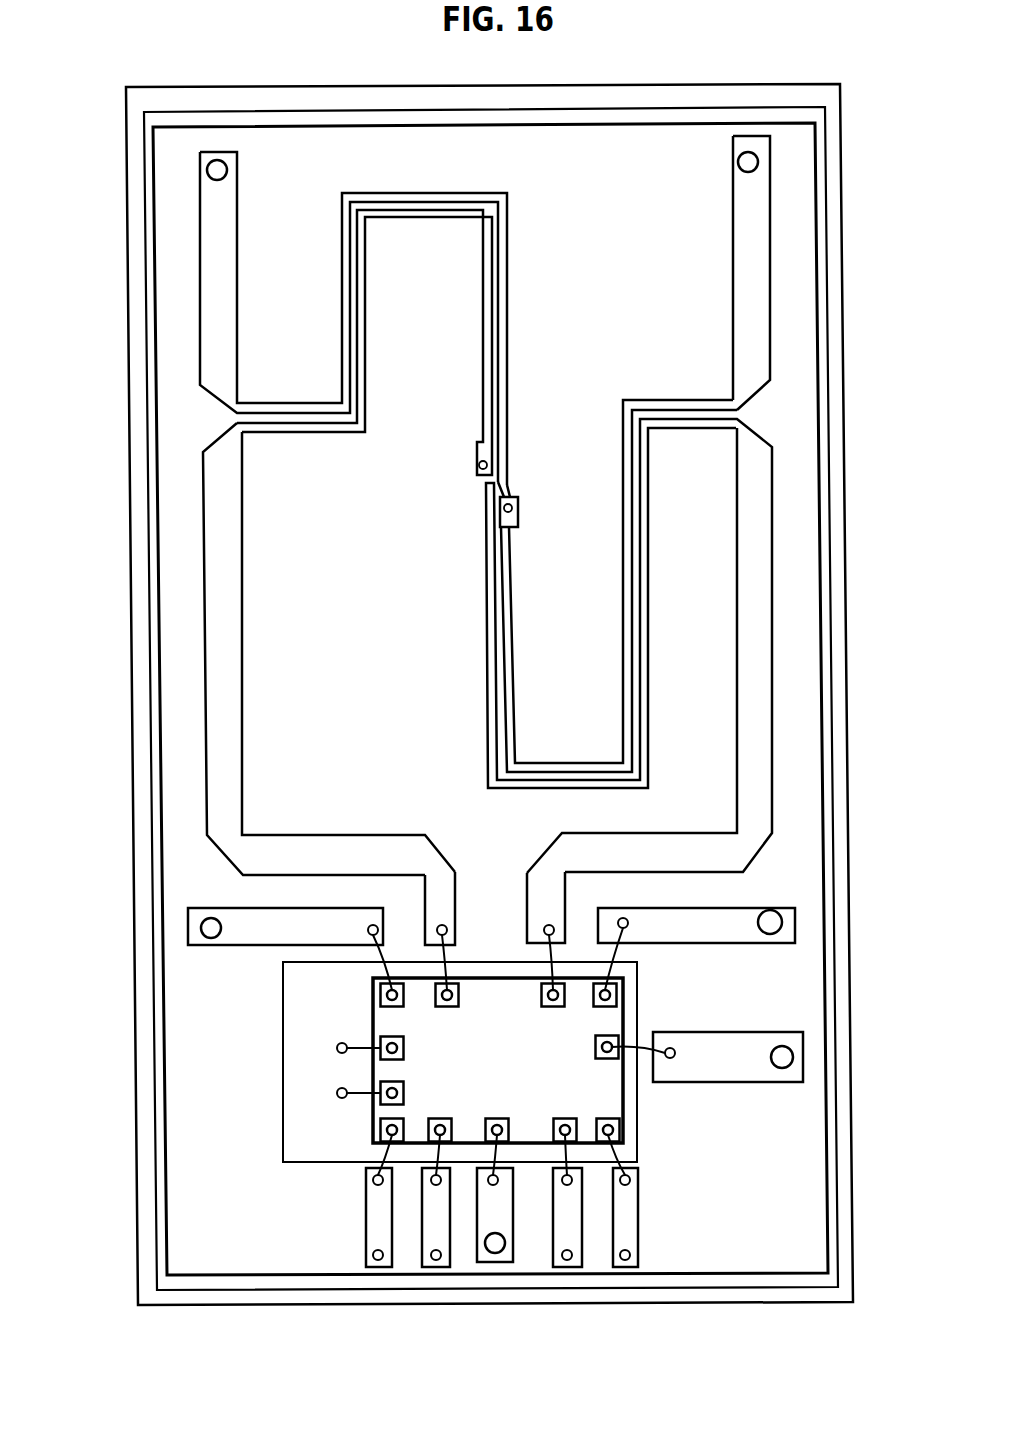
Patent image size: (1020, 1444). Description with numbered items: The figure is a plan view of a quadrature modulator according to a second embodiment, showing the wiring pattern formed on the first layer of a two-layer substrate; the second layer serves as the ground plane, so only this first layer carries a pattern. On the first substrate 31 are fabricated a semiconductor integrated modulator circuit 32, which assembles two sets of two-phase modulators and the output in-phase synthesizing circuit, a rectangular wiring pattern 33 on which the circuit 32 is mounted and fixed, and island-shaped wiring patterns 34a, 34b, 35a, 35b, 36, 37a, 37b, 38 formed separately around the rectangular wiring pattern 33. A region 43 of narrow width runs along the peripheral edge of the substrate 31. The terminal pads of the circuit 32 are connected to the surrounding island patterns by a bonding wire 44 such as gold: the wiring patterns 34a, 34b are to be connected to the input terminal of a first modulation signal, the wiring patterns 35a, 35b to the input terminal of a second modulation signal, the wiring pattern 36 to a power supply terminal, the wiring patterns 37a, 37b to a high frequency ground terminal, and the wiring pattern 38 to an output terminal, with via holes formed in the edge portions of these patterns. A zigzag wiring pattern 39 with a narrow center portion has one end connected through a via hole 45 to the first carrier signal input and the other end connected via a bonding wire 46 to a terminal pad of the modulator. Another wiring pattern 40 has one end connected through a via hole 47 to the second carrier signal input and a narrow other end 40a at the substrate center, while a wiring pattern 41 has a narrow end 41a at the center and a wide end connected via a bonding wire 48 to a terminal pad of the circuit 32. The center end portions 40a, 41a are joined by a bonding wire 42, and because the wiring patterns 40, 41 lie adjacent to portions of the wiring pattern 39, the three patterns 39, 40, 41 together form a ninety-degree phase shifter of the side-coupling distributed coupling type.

The first substrate 31 is at (130, 275).
The narrow-width region 43 is at (829, 612).
The wiring pattern 39 is at (232, 263).
The wiring pattern 40 is at (736, 264).
The narrow end portion of wiring pattern 40a is at (517, 656).
The wiring pattern 41 is at (233, 631).
The narrow end portion of wiring pattern 41a is at (482, 276).
The bonding wire 42 is at (510, 497).
The via hole 45 is at (228, 172).
The via hole 47 is at (740, 162).
The bonding wire 46 is at (532, 915).
The bonding wire 48 is at (462, 953).
The wiring pattern 37a is at (747, 934).
The wiring pattern 37b is at (253, 934).
The wiring pattern 36 is at (740, 1074).
The rectangular wiring pattern 33 is at (285, 1118).
The semiconductor integrated modulator circuit 32 is at (612, 1090).
The bonding wire 44 is at (630, 952).
The wiring pattern 34a is at (385, 1264).
The wiring pattern 34b is at (442, 1264).
The wiring pattern 38 is at (505, 1259).
The wiring pattern 35a is at (574, 1264).
The wiring pattern 35b is at (632, 1264).